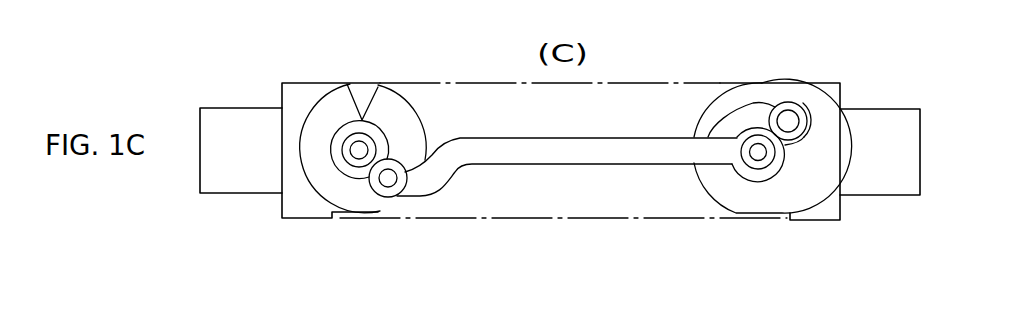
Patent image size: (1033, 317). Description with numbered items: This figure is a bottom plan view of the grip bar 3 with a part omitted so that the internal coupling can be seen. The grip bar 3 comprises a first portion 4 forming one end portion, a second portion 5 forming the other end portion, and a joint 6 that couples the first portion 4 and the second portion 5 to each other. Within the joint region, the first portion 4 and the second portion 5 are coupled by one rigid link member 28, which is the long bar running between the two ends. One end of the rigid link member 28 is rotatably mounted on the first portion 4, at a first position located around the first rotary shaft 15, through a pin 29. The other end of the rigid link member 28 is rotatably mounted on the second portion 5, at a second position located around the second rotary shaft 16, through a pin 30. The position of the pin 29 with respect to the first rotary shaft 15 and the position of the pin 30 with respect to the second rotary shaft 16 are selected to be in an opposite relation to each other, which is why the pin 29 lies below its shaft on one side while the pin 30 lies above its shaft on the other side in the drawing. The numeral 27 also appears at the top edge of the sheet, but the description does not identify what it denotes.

The grip bar 3 is at (665, 78).
The first portion 4 is at (227, 112).
The second portion 5 is at (890, 112).
The joint 6 is at (481, 80).
The first rotary shaft 15 is at (357, 137).
The second rotary shaft 16 is at (757, 150).
The cam disk 27 is at (580, 11).
The rigid link member 28 is at (552, 155).
The pin 29 is at (388, 178).
The pin 30 is at (788, 120).